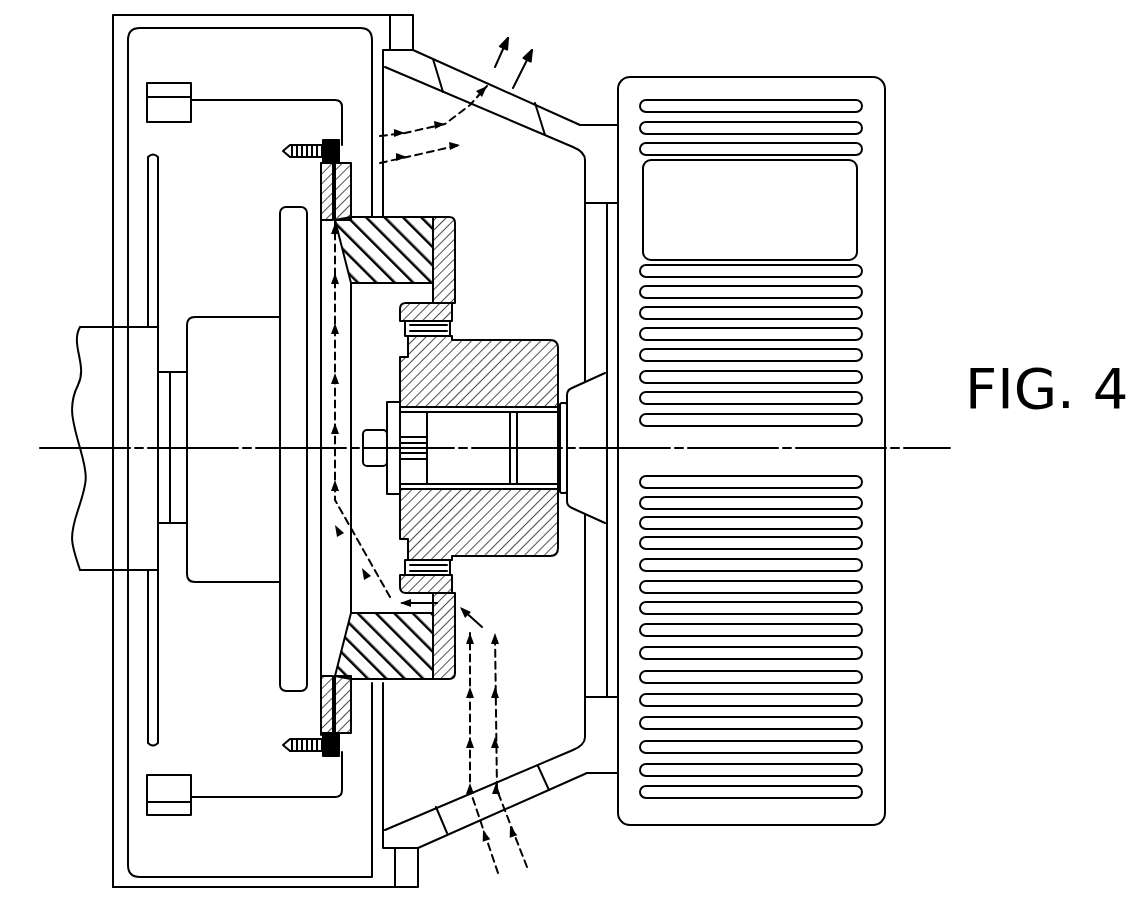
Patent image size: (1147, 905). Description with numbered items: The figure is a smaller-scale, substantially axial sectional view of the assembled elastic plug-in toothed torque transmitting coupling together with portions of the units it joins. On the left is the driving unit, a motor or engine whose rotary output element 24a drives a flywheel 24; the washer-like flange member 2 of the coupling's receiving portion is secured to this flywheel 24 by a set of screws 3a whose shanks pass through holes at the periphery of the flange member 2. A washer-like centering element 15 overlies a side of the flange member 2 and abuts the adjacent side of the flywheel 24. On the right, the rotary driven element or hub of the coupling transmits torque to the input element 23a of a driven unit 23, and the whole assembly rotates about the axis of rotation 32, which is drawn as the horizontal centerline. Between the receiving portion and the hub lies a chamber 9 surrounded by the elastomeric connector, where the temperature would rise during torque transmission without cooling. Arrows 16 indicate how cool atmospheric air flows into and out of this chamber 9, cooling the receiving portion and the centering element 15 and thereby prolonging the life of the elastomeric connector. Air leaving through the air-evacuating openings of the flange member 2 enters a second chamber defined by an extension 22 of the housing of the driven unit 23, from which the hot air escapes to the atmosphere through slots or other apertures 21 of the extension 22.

The flange member 2 is at (357, 708).
The screws 3a is at (347, 150).
The chamber 9 is at (384, 367).
The centering element 15 is at (328, 135).
The arrows 16 is at (468, 866).
The apertures 21 is at (515, 117).
The extension 22 is at (560, 110).
The driven unit 23 is at (883, 175).
The input element 23a is at (476, 428).
The flywheel 24 is at (278, 98).
The rotary output element 24a is at (103, 560).
The axis of rotation 32 is at (935, 448).